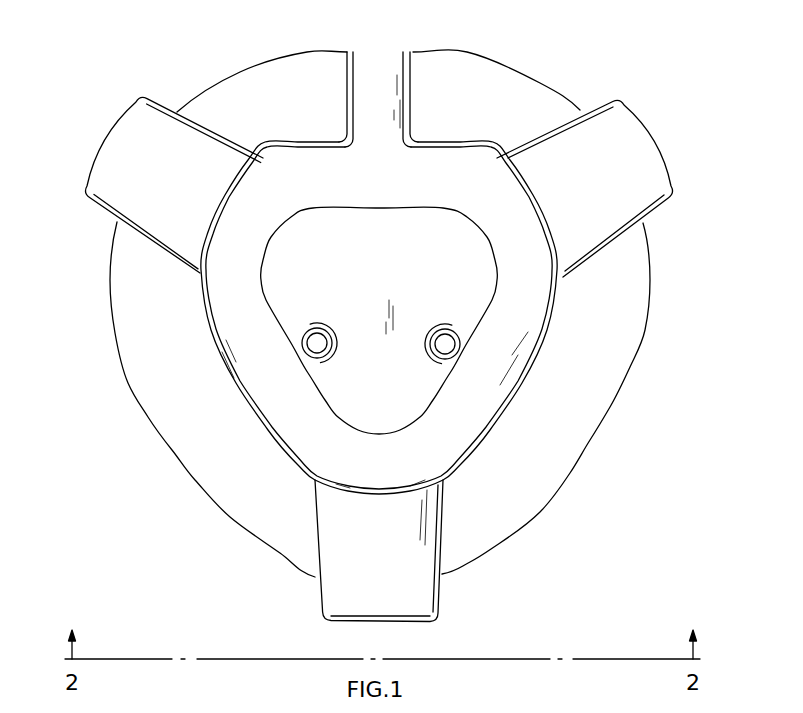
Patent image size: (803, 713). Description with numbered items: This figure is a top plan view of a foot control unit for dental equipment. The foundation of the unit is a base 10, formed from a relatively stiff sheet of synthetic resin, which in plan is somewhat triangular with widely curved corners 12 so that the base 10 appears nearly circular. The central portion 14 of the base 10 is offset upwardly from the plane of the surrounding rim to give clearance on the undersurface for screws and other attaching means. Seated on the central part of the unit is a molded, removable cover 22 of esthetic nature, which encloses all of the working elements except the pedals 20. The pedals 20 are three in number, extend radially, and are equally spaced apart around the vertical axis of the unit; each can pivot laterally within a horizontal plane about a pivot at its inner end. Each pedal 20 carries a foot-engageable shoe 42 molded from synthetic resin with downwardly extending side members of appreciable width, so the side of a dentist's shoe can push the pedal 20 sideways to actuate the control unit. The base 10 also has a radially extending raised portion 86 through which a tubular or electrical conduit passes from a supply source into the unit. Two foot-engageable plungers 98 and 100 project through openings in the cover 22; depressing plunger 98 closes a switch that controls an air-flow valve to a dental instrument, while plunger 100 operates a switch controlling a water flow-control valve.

The base 10 is at (363, 324).
The widely curved corners 12 is at (548, 100).
The central portion 14 is at (245, 392).
The pedals 20 is at (385, 365).
The cover 22 is at (366, 281).
The foot-engageable shoe 42 is at (125, 176).
The radially extending raised portion 86 is at (410, 90).
The foot-engageable plunger 98 is at (317, 343).
The foot-engageable plunger 100 is at (445, 344).